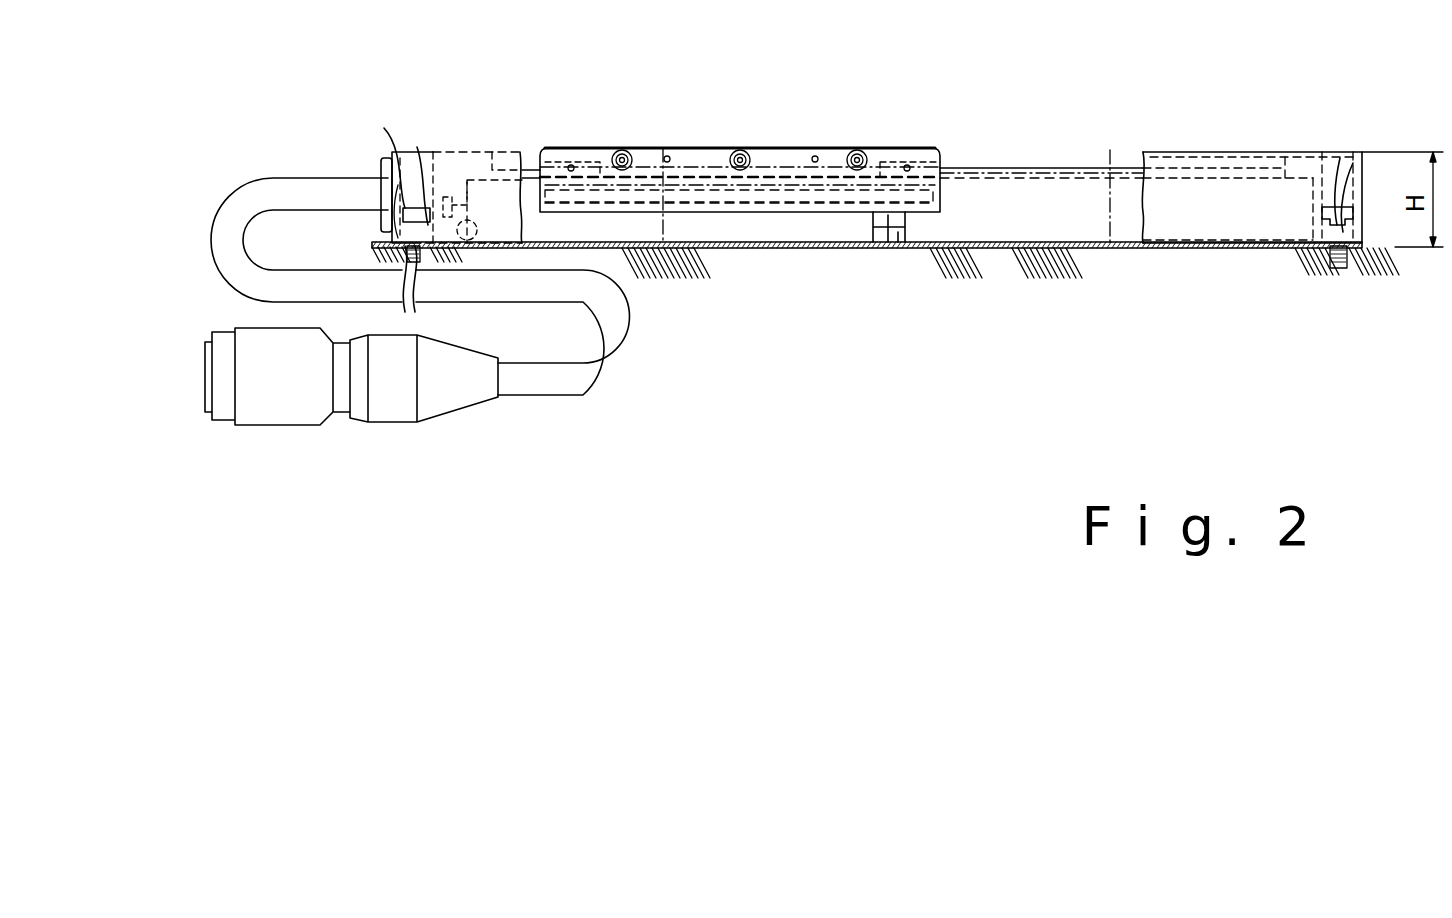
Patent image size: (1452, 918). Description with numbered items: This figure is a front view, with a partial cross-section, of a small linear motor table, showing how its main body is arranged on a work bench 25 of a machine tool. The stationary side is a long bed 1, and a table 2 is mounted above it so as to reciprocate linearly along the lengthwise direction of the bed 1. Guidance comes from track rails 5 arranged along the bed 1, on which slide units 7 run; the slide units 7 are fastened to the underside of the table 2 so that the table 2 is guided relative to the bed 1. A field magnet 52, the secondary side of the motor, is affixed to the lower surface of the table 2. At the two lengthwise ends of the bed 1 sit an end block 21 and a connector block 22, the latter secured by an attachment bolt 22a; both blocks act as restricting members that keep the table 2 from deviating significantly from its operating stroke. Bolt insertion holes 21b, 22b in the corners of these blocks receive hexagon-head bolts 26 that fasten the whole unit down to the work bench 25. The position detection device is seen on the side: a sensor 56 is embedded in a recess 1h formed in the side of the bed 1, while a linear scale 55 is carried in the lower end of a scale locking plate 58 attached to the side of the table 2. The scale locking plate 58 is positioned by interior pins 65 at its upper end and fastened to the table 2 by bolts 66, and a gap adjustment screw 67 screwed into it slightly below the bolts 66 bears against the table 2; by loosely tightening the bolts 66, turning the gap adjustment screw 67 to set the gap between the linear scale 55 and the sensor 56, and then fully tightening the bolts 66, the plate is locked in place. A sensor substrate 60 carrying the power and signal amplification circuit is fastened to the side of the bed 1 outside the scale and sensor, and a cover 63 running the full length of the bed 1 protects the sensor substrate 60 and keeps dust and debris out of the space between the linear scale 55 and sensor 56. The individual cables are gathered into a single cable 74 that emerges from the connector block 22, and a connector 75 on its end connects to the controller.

The bed 1 is at (1137, 164).
The recess 1h is at (898, 244).
The table 2 is at (946, 148).
The track rail 5 is at (1227, 170).
The slide unit 7 is at (556, 162).
The end block 21 is at (1362, 183).
The bolt insertion hole 21b is at (1353, 163).
The connector block 22 is at (383, 192).
The attachment bolt 22a is at (448, 196).
The bolt insertion hole 22b is at (384, 128).
The work bench 25 is at (1012, 289).
The bolt 26 is at (423, 165).
The field magnet 52 is at (664, 148).
The linear scale 55 is at (851, 198).
The sensor 56 is at (888, 244).
The scale locking plate 58 is at (733, 212).
The sensor substrate 60 is at (1110, 150).
The cover 63 is at (1143, 246).
The interior pin 65 is at (669, 157).
The bolt 66 is at (623, 150).
The gap adjustment screw 67 is at (572, 165).
The cable 74 is at (622, 392).
The connector 75 is at (308, 428).